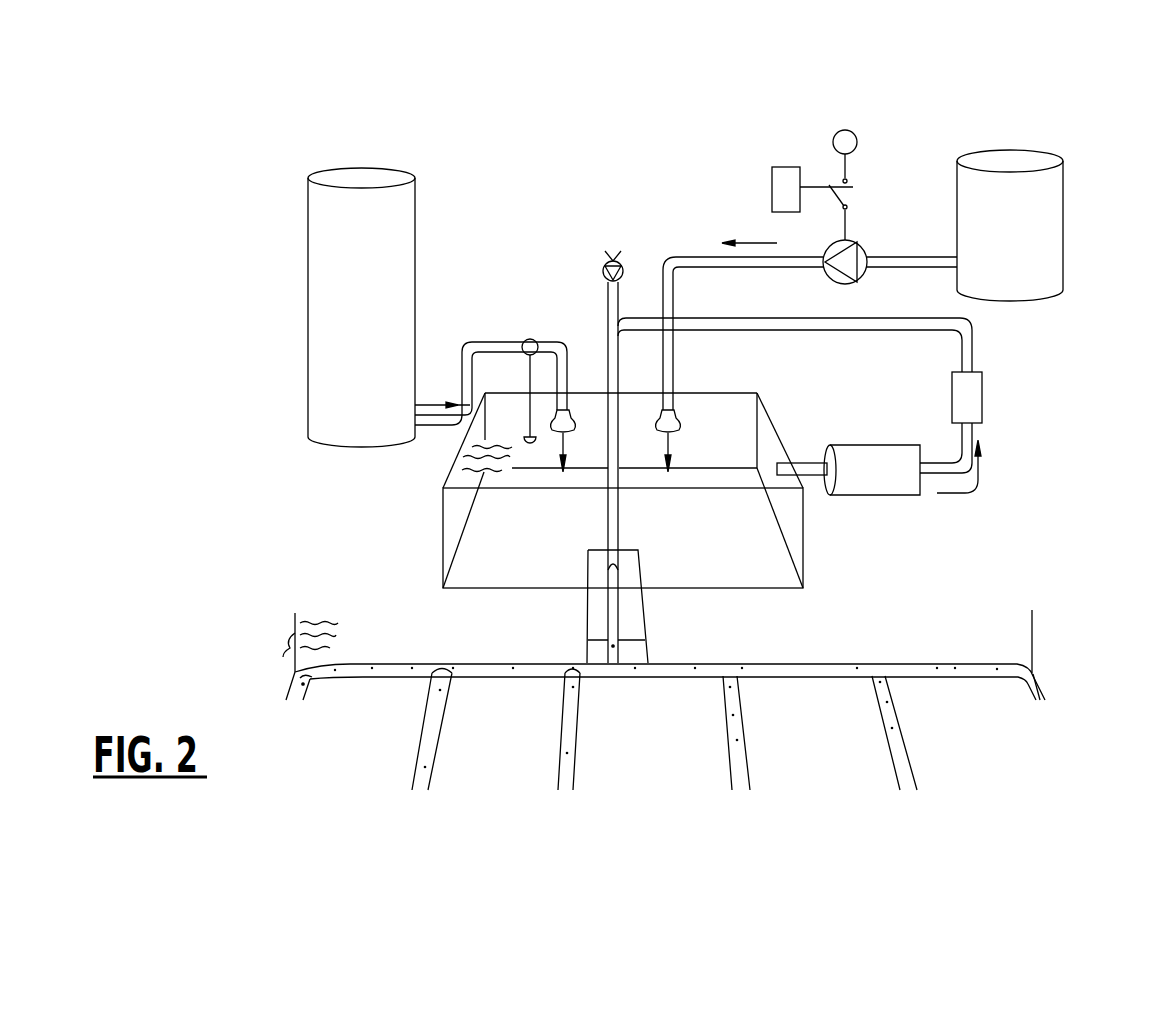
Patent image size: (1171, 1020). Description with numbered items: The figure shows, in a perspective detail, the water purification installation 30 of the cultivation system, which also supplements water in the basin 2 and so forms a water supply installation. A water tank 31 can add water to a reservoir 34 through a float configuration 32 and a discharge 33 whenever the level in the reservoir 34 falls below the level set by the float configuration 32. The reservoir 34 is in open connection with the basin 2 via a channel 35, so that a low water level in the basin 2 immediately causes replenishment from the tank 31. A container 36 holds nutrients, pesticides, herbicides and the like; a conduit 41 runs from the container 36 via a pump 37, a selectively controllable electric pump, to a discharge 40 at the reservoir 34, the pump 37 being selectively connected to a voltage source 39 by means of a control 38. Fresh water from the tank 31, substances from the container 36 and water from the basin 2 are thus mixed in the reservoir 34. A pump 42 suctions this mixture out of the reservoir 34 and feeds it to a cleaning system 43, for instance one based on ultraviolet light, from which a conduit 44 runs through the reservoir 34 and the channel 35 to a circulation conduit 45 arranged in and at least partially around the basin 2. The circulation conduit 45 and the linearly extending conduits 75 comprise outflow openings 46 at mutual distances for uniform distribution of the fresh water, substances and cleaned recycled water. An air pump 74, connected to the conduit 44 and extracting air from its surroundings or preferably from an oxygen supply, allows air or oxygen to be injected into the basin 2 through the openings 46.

The basin 2 is at (1075, 653).
The water purification installation 30 is at (577, 185).
The water tank 31 is at (425, 222).
The float configuration 32 is at (528, 339).
The discharge 33 is at (570, 418).
The reservoir 34 is at (425, 510).
The channel 35 is at (648, 612).
The container 36 is at (1048, 207).
The pump 37 is at (864, 242).
The control 38 is at (785, 167).
The voltage source 39 is at (851, 130).
The discharge 40 is at (670, 420).
The conduit 41 is at (684, 262).
The pump 42 is at (867, 482).
The cleaning system 43 is at (968, 397).
The conduit 44 is at (968, 345).
The circulation conduit 45 is at (497, 672).
The outflow openings 46 is at (434, 728).
The air pump 74 is at (602, 266).
The conduits 75 is at (420, 765).